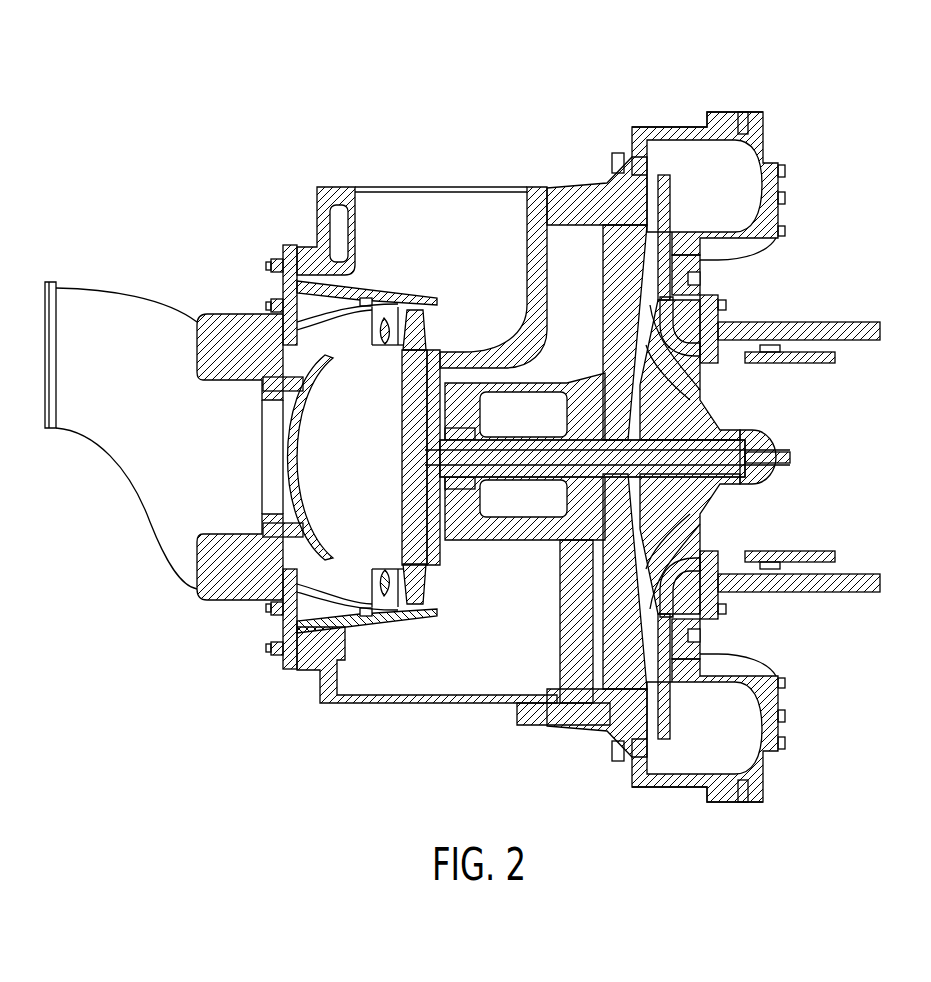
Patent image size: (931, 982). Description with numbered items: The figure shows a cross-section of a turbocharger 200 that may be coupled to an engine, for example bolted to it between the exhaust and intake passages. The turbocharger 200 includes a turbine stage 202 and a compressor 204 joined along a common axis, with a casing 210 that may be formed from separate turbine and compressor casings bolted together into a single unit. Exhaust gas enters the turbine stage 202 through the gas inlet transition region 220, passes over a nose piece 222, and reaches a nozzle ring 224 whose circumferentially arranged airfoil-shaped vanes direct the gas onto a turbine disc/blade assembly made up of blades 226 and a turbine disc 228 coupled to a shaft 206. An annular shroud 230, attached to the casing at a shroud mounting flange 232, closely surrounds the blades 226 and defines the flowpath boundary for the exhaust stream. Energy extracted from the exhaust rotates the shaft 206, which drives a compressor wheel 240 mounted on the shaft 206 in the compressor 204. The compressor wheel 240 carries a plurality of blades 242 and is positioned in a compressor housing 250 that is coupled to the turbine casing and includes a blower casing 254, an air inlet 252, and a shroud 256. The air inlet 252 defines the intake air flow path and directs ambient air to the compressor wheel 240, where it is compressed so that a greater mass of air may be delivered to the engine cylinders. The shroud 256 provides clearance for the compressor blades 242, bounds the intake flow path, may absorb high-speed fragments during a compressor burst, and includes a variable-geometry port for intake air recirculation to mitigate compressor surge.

The turbocharger 200 is at (298, 114).
The turbine stage 202 is at (301, 189).
The compressor 204 is at (776, 52).
The shaft 206 is at (748, 480).
The casing 210 is at (447, 187).
The gas inlet transition region 220 is at (153, 403).
The nose piece 222 is at (303, 505).
The nozzle ring 224 is at (372, 320).
The blades 226 is at (426, 333).
The turbine disc 228 is at (422, 455).
The annular shroud 230 is at (422, 301).
The shroud mounting flange 232 is at (294, 248).
The compressor wheel 240 is at (716, 426).
The blades 242 is at (646, 542).
The compressor housing 250 is at (780, 113).
The air inlet 252 is at (797, 323).
The blower casing 254 is at (705, 128).
The shroud 256 is at (812, 560).